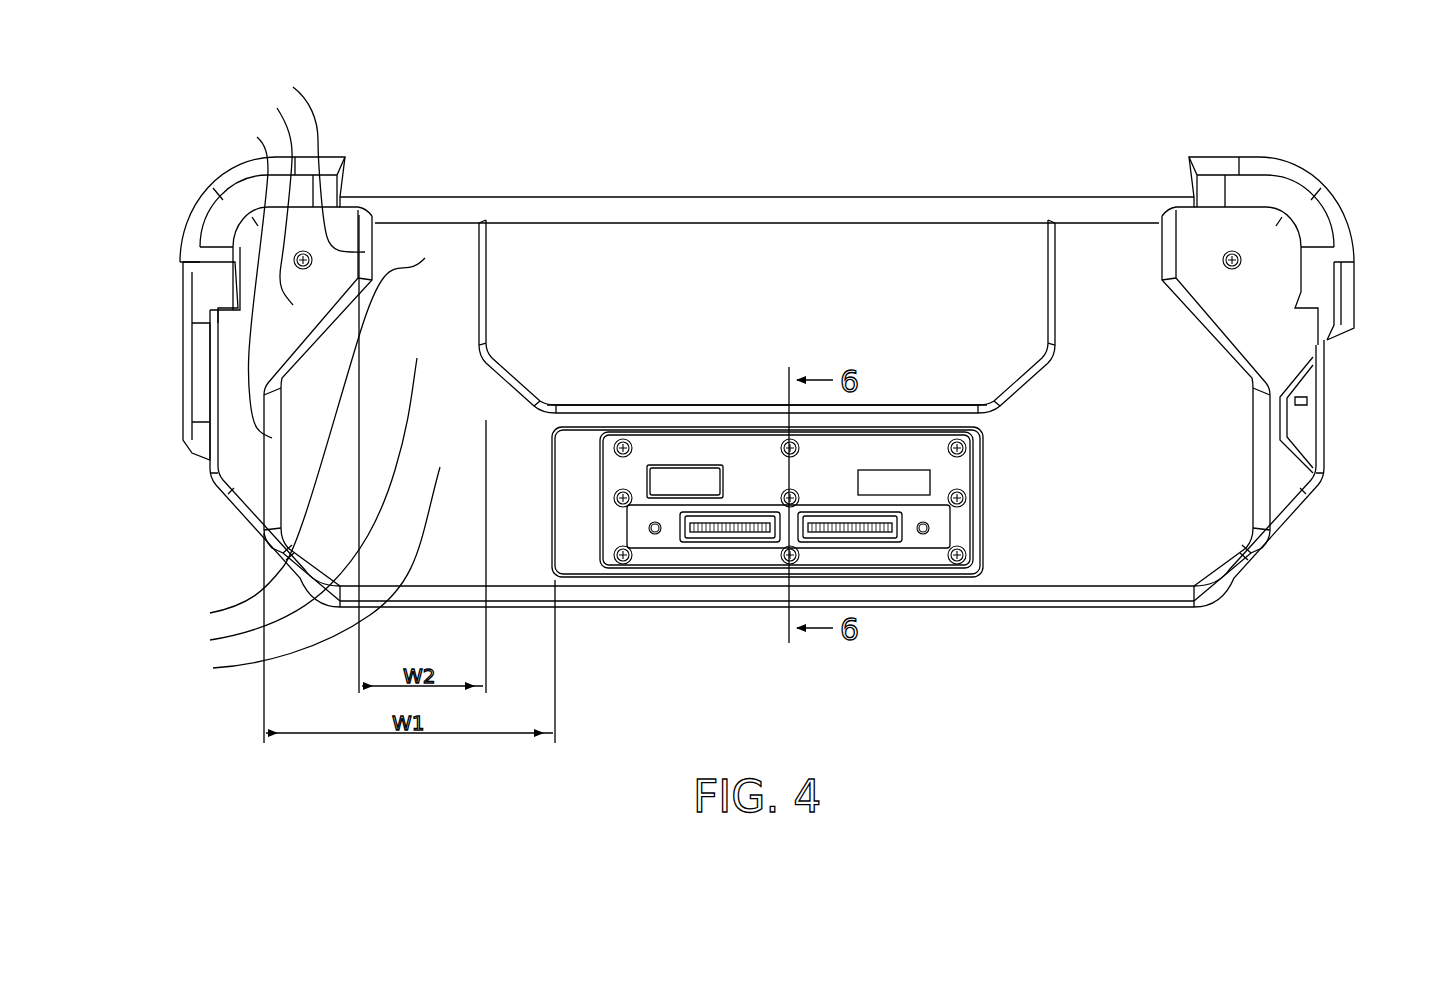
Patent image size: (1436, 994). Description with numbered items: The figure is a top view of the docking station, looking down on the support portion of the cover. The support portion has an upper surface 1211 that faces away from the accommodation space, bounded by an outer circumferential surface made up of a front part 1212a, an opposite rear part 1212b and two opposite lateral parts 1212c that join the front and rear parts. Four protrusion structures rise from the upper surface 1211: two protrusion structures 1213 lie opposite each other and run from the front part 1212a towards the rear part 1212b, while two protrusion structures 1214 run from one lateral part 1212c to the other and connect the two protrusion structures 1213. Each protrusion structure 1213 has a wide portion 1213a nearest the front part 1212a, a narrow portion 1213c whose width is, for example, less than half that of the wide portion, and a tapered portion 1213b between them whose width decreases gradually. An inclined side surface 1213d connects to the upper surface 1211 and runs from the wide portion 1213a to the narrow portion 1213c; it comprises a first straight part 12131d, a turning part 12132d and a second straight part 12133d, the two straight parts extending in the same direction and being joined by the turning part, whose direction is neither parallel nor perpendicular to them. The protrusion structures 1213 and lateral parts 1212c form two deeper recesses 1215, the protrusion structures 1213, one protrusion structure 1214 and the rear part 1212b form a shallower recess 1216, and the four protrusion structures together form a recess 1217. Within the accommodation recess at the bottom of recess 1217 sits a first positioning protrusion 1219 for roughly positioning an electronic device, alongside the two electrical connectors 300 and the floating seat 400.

The upper surface 1211 is at (1278, 247).
The front part 1212a is at (707, 614).
The rear part 1212b is at (824, 194).
The lateral part 1212c is at (200, 496).
The protrusion structure 1213 is at (152, 597).
The wide portion 1213a is at (294, 575).
The tapered portion 1213b is at (282, 506).
The narrow portion 1213c is at (286, 443).
The side surface 1213d is at (153, 62).
The first straight part 12131d is at (257, 137).
The turning part 12132d is at (277, 108).
The second straight part 12133d is at (293, 87).
The protrusion structure 1214 is at (647, 420).
The recess 1215 is at (232, 408).
The recess 1216 is at (960, 272).
The recess 1217 is at (579, 536).
The first positioning protrusion 1219 is at (675, 492).
The electrical connector 300 is at (730, 533).
The floating seat 400 is at (975, 520).